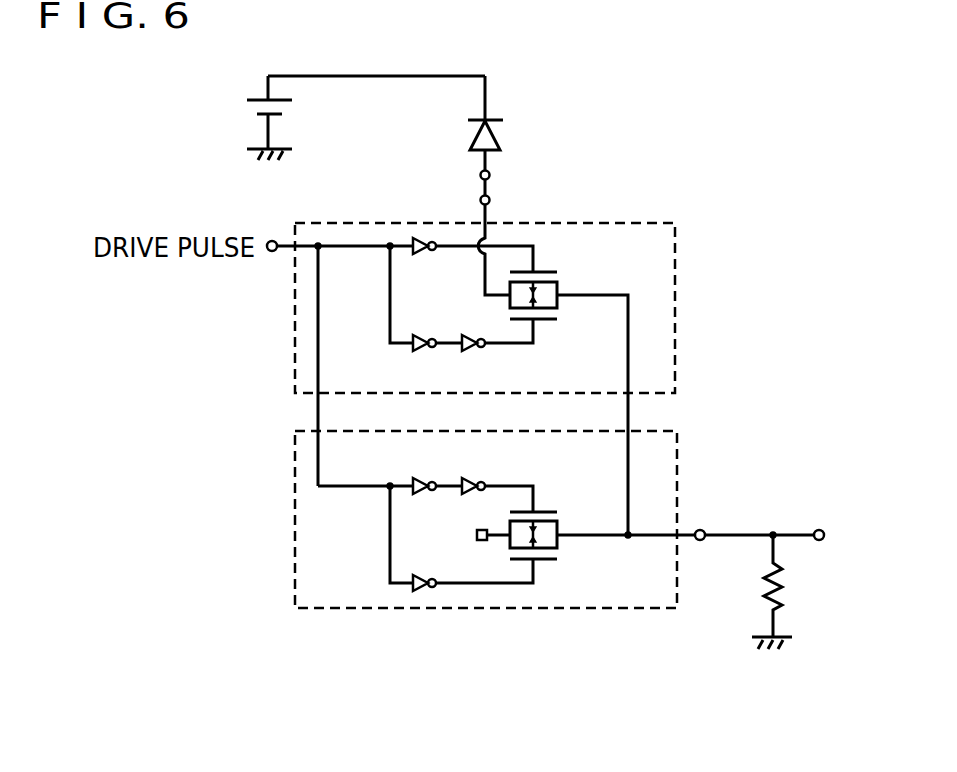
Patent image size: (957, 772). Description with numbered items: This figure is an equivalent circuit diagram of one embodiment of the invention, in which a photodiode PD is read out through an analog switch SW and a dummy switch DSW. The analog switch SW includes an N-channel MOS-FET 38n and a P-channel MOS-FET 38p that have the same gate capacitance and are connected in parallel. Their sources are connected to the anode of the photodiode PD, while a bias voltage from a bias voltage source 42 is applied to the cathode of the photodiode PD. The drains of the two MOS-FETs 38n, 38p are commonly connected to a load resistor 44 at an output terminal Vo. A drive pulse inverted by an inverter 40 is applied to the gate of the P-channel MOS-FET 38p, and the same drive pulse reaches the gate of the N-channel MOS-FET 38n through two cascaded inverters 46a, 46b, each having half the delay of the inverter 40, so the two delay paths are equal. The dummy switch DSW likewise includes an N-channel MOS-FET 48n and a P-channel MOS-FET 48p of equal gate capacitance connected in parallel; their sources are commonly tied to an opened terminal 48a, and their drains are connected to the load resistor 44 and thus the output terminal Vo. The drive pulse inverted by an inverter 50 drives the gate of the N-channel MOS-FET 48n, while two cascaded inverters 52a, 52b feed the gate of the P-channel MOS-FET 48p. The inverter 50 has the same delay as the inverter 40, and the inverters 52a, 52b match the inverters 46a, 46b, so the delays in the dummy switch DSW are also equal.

The bias voltage source 42 is at (275, 115).
The photodiode PD is at (501, 142).
The inverter 40 is at (422, 255).
The inverter 46a is at (422, 352).
The inverter 46b is at (470, 352).
The P-channel MOS-FET 38p is at (557, 271).
The N-channel MOS-FET 38n is at (540, 320).
The analog switch SW is at (662, 278).
The dummy switch DSW is at (672, 472).
The inverter 52a is at (428, 466).
The inverter 52b is at (470, 477).
The opened terminal 48a is at (476, 535).
The P-channel MOS-FET 48p is at (557, 511).
The N-channel MOS-FET 48n is at (540, 561).
The inverter 50 is at (422, 575).
The load resistor 44 is at (783, 590).
The output terminal Vo is at (816, 521).